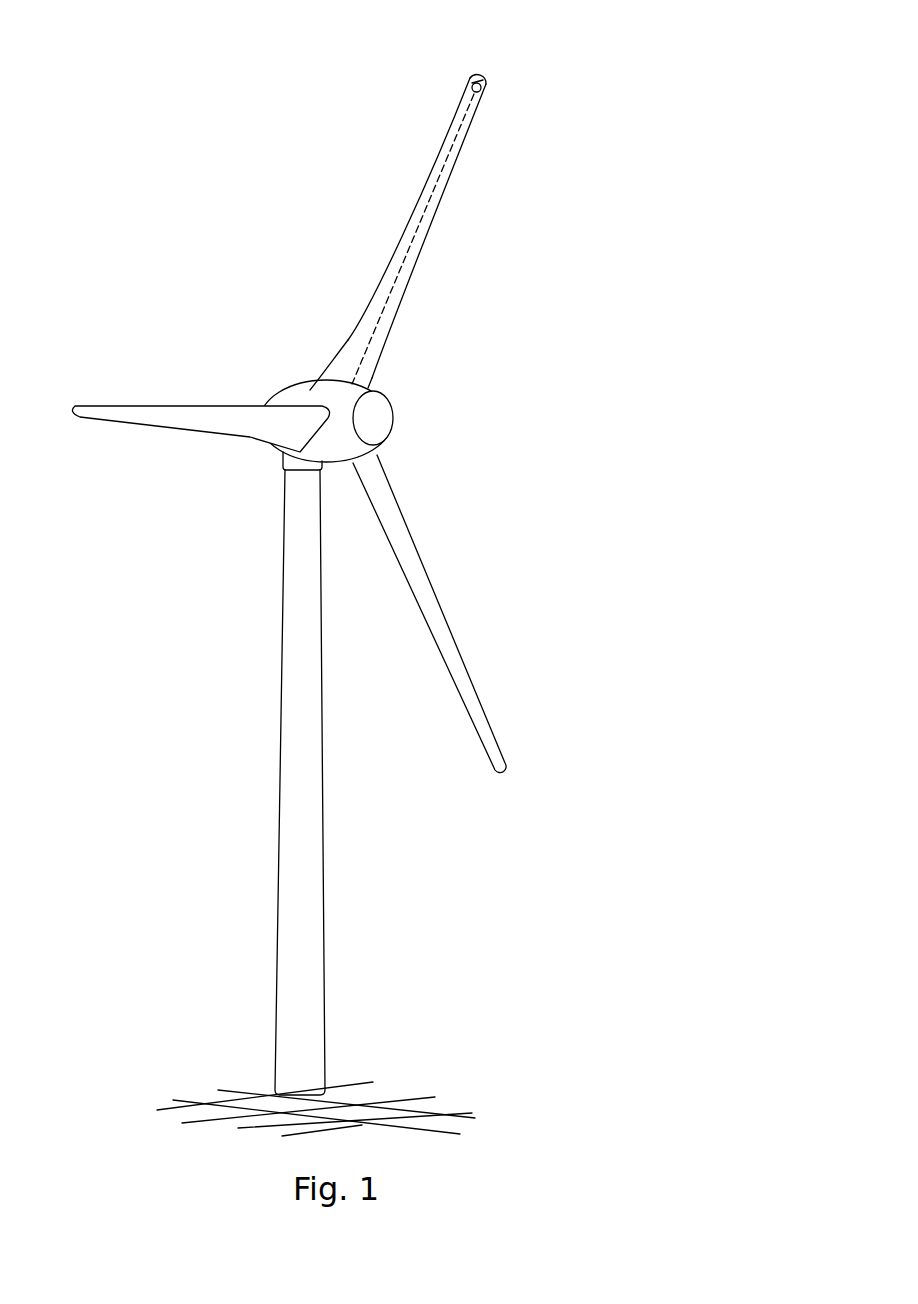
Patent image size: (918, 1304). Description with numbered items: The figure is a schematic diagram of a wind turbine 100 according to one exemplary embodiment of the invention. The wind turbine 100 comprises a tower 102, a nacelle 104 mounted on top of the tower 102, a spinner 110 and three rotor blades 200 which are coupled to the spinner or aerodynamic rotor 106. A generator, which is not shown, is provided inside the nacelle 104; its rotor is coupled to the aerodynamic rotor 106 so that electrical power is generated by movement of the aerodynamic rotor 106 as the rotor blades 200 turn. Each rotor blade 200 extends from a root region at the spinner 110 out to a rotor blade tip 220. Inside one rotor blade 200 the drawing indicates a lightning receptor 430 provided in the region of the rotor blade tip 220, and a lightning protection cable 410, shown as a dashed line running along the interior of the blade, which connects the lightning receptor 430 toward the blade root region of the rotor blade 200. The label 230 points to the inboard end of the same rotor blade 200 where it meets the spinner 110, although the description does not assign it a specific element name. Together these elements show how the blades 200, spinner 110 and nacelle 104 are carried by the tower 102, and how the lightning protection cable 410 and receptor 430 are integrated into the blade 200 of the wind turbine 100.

The wind turbine 100 is at (360, 562).
The tower 102 is at (307, 882).
The nacelle 104 is at (293, 393).
The aerodynamic rotor 106 is at (360, 401).
The spinner 110 is at (378, 418).
The rotor blade 200 is at (137, 407).
The rotor blade tip 220 is at (485, 72).
The blade root 230 is at (367, 392).
The lightning protection cable 410 is at (419, 229).
The lightning receptor 430 is at (481, 93).